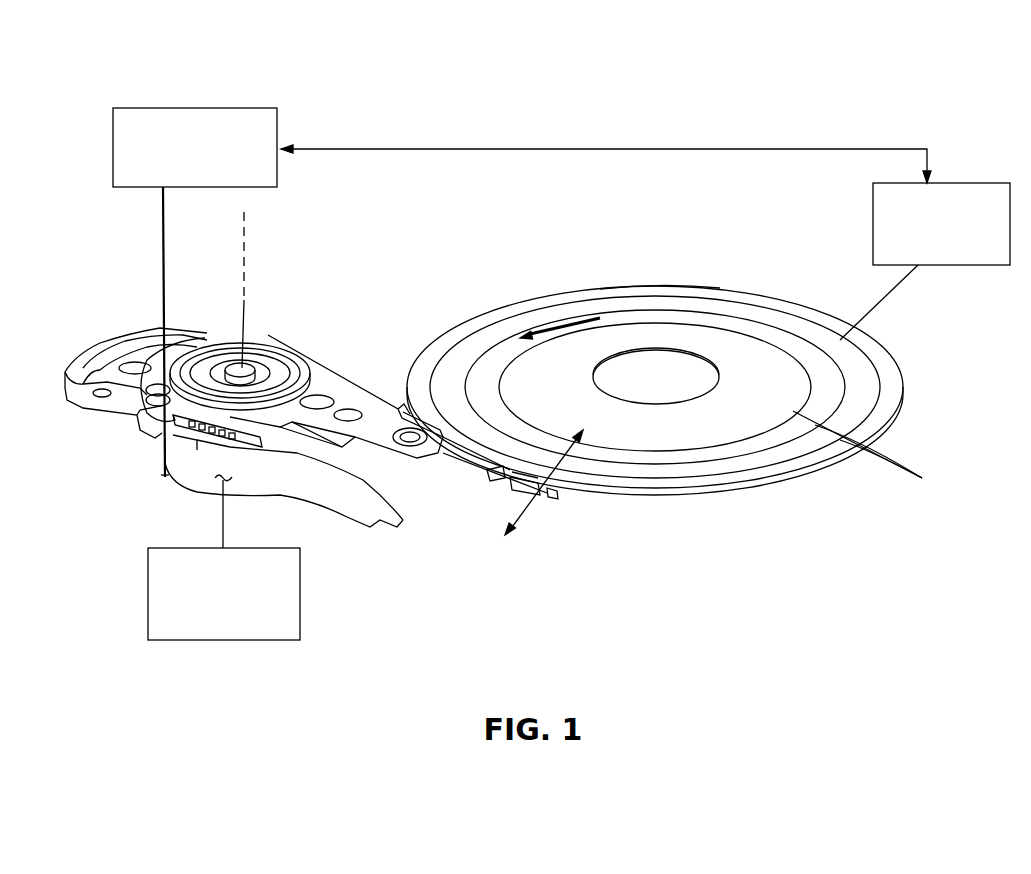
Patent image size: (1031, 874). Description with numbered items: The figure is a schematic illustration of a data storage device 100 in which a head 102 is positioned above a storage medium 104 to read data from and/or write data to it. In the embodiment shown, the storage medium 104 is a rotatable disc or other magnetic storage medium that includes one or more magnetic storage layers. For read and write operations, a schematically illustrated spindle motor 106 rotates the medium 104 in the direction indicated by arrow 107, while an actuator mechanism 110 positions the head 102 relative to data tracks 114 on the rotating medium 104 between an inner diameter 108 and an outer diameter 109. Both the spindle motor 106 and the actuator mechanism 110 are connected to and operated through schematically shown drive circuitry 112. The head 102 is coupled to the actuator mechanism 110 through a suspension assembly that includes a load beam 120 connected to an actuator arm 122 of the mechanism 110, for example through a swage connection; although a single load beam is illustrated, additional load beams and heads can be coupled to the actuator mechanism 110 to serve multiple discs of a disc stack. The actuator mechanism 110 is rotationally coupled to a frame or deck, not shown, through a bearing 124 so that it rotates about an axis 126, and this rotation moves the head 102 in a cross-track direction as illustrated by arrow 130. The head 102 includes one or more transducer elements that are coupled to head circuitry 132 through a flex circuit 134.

The data storage device 100 is at (818, 97).
The head 102 is at (555, 497).
The storage medium 104 is at (777, 297).
The spindle motor 106 is at (973, 183).
The arrow 107 is at (568, 320).
The inner diameter 108 is at (692, 352).
The outer diameter 109 is at (660, 286).
The actuator mechanism 110 is at (262, 318).
The drive circuitry 112 is at (277, 112).
The data tracks 114 is at (877, 450).
The load beam 120 is at (446, 457).
The actuator arm 122 is at (364, 400).
The bearing 124 is at (238, 366).
The axis 126 is at (244, 288).
The arrow 130 is at (565, 468).
The head circuitry 132 is at (300, 590).
The flex circuit 134 is at (290, 487).